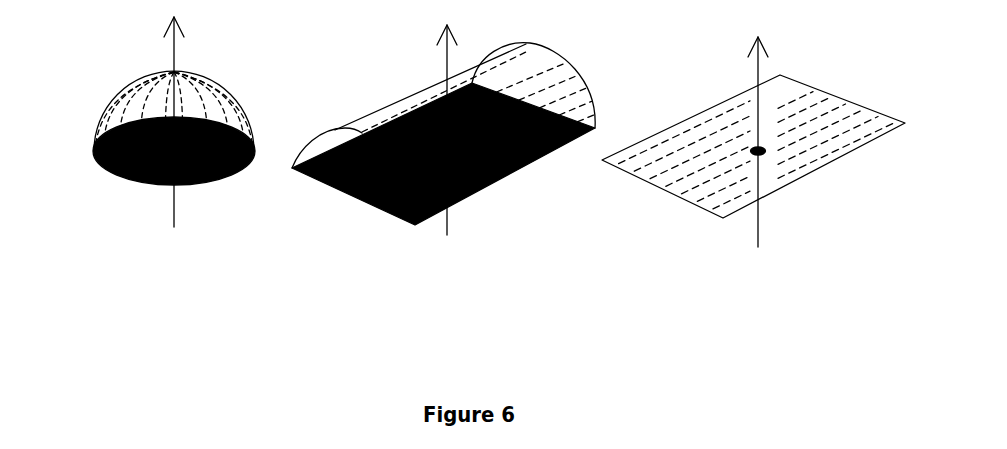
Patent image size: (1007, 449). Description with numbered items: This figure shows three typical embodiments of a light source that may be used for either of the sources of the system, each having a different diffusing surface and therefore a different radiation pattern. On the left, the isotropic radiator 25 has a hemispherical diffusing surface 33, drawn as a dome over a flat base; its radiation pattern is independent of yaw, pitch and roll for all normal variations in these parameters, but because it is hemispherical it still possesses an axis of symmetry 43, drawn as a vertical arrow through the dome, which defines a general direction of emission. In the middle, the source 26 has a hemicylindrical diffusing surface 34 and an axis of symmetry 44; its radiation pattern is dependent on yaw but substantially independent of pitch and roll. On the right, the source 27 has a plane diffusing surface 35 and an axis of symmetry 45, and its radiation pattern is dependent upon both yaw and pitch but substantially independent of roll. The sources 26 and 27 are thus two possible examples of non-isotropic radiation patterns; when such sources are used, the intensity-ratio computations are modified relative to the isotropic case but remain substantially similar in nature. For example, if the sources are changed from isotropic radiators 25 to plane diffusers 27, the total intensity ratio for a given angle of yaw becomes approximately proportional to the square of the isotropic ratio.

The isotropic radiator 25 is at (132, 178).
The source with hemicylindrical diffusing surface 26 is at (415, 227).
The source with plane diffusing surface 27 is at (693, 205).
The hemispherical diffusing surface 33 is at (210, 115).
The hemicylindrical diffusing surface 34 is at (522, 78).
The plane diffusing surface 35 is at (800, 130).
The axis of symmetry 43 is at (174, 53).
The axis of symmetry 44 is at (447, 62).
The axis of symmetry 45 is at (758, 70).